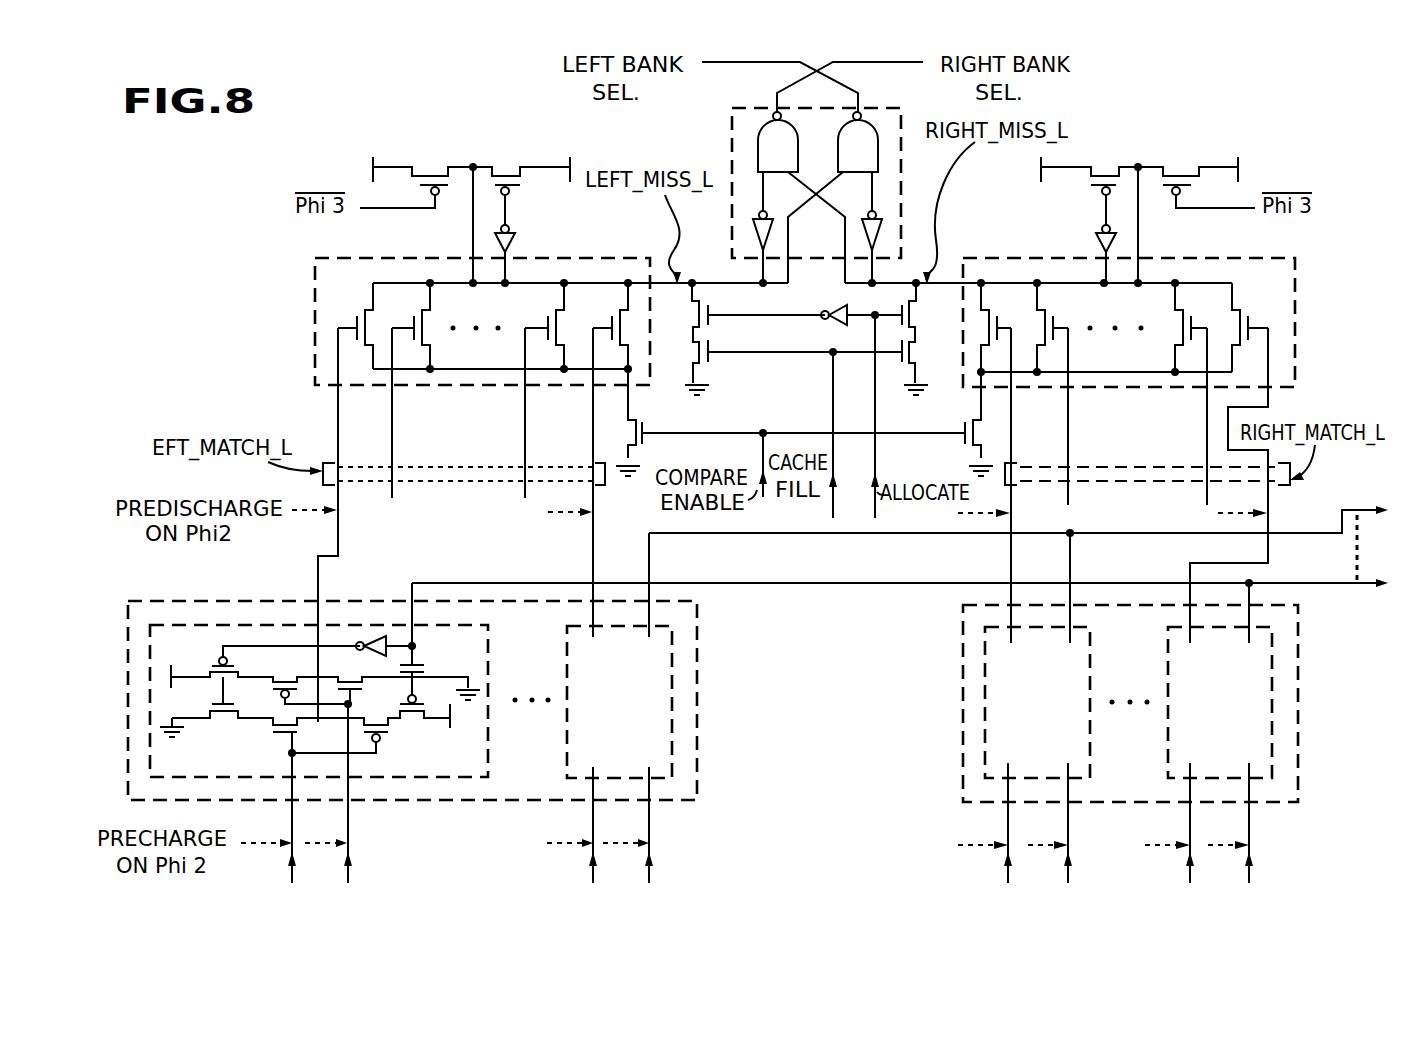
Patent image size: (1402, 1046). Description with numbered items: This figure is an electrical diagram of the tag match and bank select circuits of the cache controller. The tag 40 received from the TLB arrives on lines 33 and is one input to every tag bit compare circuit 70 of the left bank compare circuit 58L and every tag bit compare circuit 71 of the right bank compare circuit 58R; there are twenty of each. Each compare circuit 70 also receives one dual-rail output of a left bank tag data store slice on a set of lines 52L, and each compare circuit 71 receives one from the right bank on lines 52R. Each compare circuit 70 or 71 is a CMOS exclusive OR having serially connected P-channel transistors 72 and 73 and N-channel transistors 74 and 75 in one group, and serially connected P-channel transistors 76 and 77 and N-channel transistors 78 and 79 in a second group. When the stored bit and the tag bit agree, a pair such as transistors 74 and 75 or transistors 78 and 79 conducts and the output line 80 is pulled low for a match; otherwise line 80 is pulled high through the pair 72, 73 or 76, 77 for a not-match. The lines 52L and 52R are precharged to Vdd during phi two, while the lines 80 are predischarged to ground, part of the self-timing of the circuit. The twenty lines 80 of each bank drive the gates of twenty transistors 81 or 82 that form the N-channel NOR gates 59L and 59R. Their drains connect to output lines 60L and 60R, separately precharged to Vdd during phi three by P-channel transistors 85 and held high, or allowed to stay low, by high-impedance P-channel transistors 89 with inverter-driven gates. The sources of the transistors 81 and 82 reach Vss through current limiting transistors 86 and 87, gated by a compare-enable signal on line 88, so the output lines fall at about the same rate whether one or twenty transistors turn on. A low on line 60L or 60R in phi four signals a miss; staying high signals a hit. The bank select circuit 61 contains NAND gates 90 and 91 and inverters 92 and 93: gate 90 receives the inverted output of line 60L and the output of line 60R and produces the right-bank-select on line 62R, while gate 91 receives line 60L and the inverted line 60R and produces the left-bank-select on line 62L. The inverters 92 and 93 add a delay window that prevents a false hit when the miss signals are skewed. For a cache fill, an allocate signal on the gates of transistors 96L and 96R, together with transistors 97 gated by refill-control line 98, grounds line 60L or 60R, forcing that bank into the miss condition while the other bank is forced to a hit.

The P-channel transistor 85 is at (432, 165).
The high-impedance P-channel transistor 89 is at (507, 165).
The output line 60L is at (583, 283).
The output line 60R is at (1008, 283).
The NOR gate 59L is at (312, 318).
The NOR gate 59R is at (1300, 328).
The transistor 81 is at (359, 316).
The transistor 82 is at (1000, 323).
The bank select circuit 61 is at (732, 137).
The left-bank-select line 62L is at (708, 64).
The right-bank-select line 62R is at (855, 64).
The NAND gate 90 is at (790, 166).
The NAND gate 91 is at (870, 166).
The inverter 92 is at (753, 236).
The inverter 93 is at (880, 226).
The transistor 96L is at (698, 311).
The transistor 96R is at (905, 339).
The transistor 97 is at (712, 352).
The current limiting transistor 86 is at (643, 440).
The current limiting transistor 87 is at (965, 447).
The compare-enable line 88 is at (760, 445).
The refill-control line 98 is at (833, 508).
The output line 80 is at (338, 538).
The line 33 is at (455, 582).
The compare circuit 58L is at (135, 590).
The compare circuit 58R is at (952, 633).
The tag bit compare circuit 70 is at (242, 618).
The tag bit compare circuit 71 is at (983, 612).
The P-channel transistor 72 is at (222, 728).
The P-channel transistor 73 is at (280, 740).
The N-channel transistor 74 is at (388, 740).
The N-channel transistor 75 is at (425, 722).
The P-channel transistor 76 is at (418, 665).
The P-channel transistor 77 is at (345, 688).
The N-channel transistor 78 is at (280, 688).
The N-channel transistor 79 is at (218, 660).
The line 52L is at (293, 823).
The line 52R is at (1008, 826).
The tag 40 is at (1284, 528).